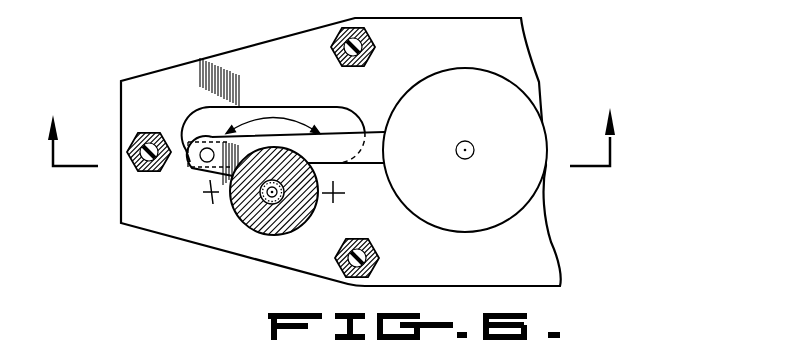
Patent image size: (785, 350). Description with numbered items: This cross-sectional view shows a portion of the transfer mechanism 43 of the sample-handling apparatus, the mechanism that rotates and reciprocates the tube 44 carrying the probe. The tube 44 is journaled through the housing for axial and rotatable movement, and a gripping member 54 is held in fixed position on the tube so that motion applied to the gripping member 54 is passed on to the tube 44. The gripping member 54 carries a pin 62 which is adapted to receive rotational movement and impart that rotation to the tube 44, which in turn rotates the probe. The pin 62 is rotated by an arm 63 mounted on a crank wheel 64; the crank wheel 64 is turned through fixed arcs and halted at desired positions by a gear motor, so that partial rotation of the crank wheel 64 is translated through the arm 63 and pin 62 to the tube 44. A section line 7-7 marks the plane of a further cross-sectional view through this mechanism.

The section line 7- 7 is at (332, 124).
The transfer mechanism 43 is at (160, 277).
The tube 44 is at (267, 198).
The gripping member 54 is at (305, 209).
The pin 62 is at (190, 150).
The arm 63 is at (343, 142).
The crank wheel 64 is at (447, 72).